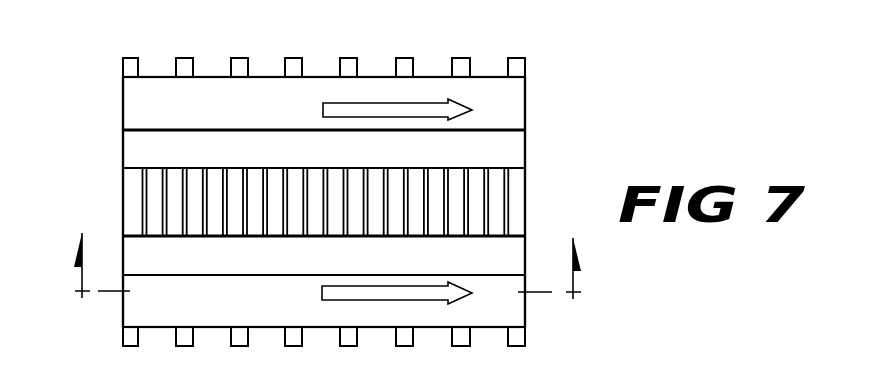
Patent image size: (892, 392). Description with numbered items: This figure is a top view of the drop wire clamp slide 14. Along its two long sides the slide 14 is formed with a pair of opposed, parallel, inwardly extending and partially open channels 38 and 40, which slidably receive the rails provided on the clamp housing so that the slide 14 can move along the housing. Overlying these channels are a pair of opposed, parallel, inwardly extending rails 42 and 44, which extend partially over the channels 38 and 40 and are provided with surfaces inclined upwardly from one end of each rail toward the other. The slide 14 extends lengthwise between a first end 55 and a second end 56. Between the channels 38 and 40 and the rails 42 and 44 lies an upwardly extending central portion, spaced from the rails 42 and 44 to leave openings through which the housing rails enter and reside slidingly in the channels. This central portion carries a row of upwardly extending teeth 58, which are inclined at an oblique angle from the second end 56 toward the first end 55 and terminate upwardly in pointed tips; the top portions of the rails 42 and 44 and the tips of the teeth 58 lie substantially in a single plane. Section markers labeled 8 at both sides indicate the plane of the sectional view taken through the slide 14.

The slide 14 is at (492, 76).
The rail 44 is at (271, 95).
The first end 55 is at (122, 110).
The second end 56 is at (526, 112).
The channel 40 is at (485, 152).
The teeth 58 is at (493, 200).
The channel 38 is at (482, 263).
The rail 42 is at (430, 312).
The section line 8- 8 is at (325, 246).